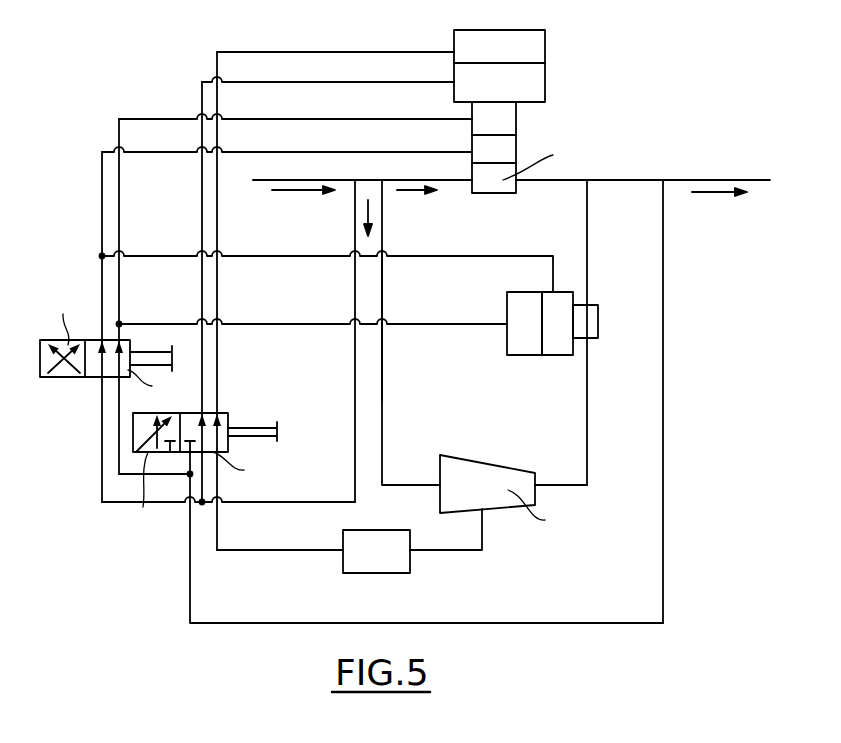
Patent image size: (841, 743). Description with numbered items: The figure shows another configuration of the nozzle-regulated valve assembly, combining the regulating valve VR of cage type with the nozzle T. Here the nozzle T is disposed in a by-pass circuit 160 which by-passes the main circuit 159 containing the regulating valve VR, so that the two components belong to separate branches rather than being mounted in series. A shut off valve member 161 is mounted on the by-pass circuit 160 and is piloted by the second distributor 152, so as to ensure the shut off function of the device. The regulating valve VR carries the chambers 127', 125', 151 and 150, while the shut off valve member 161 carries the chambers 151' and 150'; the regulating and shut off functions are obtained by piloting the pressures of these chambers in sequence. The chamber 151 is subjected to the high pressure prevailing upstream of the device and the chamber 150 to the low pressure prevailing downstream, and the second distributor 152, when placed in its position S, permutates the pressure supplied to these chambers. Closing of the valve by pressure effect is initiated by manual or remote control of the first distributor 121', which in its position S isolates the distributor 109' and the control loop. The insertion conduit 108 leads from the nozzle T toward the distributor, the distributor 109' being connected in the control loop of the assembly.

The chamber 127' is at (499, 46).
The chamber 125' is at (499, 82).
The chamber 151 is at (496, 118).
The chamber 150 is at (496, 149).
The main circuit 159 is at (462, 182).
The shut off valve member 161 is at (587, 318).
The chamber 151' is at (515, 349).
The chamber 150' is at (569, 350).
The by-pass circuit 160 is at (386, 390).
The second distributor 152 is at (67, 378).
The first distributor 121' is at (210, 452).
The distributor 109' is at (376, 551).
The insertion conduit 108 is at (491, 516).